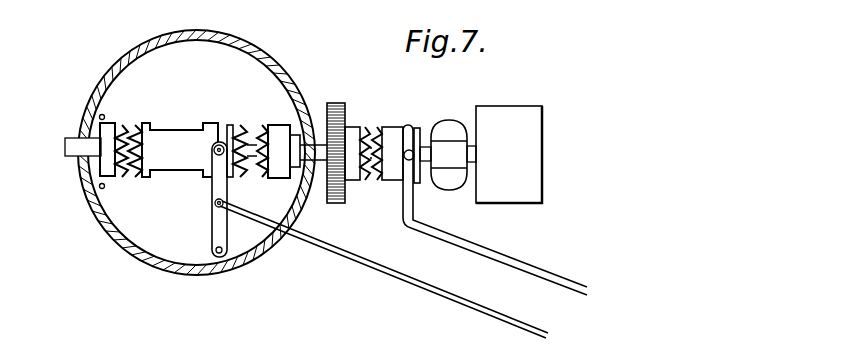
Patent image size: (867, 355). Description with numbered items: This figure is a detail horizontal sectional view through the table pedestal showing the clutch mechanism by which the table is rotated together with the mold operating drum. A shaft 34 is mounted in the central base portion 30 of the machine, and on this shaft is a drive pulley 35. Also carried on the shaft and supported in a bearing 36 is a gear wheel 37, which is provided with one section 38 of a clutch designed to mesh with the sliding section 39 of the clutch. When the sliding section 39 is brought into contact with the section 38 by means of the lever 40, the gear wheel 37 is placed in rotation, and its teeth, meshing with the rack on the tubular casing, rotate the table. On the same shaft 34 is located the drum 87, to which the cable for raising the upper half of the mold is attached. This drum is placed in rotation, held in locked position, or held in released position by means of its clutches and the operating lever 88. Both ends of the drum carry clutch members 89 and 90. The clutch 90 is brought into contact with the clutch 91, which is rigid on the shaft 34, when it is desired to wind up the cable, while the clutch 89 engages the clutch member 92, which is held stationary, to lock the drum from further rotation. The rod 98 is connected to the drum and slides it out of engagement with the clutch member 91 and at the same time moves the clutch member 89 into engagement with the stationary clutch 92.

The central base portion 30 is at (141, 254).
The shaft 34 is at (64, 150).
The drive pulley 35 is at (505, 117).
The bearing 36 is at (445, 187).
The gear wheel 37 is at (342, 105).
The clutch section 38 is at (354, 127).
The sliding clutch section 39 is at (394, 129).
The lever 40 is at (403, 206).
The drum 87 is at (180, 129).
The operating lever 88 is at (250, 224).
The clutch member 89 is at (137, 126).
The clutch member 90 is at (236, 127).
The clutch member 91 is at (268, 131).
The stationary clutch member 92 is at (112, 173).
The rod 98 is at (427, 295).